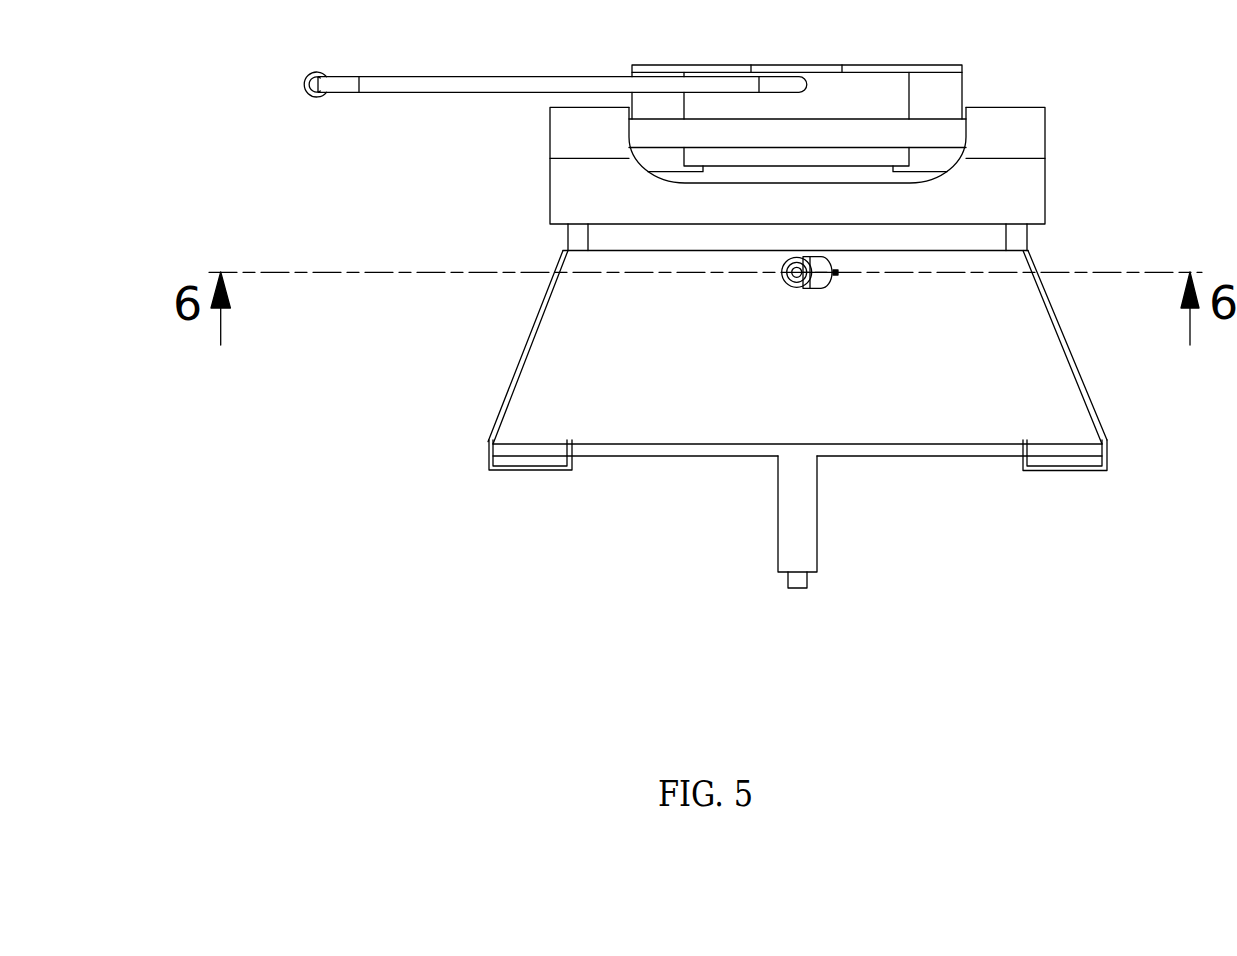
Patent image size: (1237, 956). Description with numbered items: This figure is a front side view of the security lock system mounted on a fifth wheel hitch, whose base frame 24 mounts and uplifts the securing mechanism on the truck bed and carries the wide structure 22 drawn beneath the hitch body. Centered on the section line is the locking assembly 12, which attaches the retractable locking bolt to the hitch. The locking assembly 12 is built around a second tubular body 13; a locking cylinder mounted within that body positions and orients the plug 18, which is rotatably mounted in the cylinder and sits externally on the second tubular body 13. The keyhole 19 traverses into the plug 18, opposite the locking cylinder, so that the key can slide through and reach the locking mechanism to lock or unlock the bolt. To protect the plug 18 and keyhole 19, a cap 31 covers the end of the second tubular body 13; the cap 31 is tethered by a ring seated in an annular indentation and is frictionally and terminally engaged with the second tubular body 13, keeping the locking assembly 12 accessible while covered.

The locking assembly 12 is at (809, 281).
The second tubular body 13 is at (782, 277).
The plug 18 is at (782, 285).
The keyhole 19 is at (801, 255).
The base plate 22 is at (486, 412).
The base frame 24 is at (488, 446).
The cap 31 is at (833, 277).